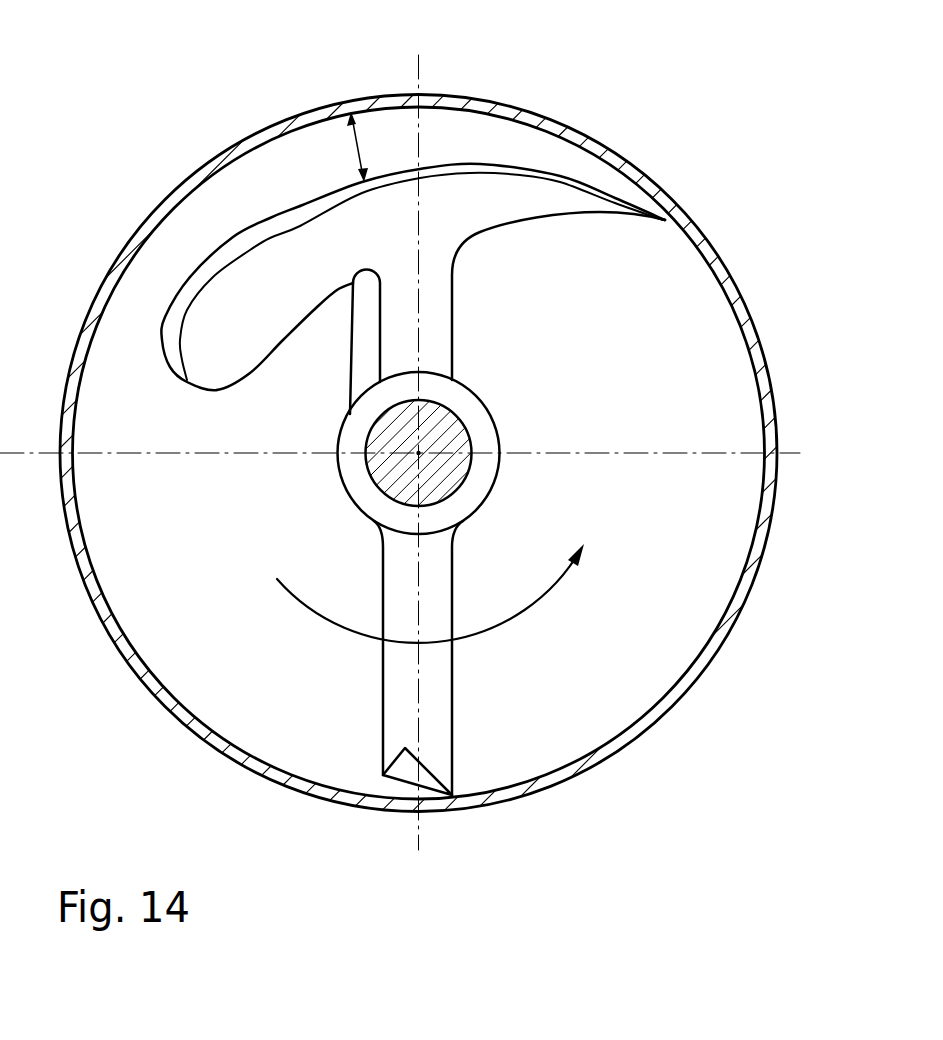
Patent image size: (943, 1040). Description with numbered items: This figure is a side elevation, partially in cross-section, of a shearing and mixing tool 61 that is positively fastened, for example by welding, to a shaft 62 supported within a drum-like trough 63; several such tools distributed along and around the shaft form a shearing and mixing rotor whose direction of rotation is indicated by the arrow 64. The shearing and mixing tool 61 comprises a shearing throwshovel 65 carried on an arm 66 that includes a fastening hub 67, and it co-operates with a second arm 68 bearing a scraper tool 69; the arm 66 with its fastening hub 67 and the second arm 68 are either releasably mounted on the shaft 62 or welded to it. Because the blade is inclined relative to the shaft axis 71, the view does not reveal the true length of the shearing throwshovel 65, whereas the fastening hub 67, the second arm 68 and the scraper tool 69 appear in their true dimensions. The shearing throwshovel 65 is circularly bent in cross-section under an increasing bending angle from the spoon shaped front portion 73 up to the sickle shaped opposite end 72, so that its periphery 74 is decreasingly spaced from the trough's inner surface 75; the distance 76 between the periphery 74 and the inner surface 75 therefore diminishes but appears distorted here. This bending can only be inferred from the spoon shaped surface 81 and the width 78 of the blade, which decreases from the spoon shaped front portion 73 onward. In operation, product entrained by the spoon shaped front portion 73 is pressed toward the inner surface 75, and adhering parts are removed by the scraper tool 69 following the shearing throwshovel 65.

The shearing and mixing tool 61 is at (400, 327).
The shaft 62 is at (388, 478).
The drum-like trough 63 is at (150, 690).
The arrow 64 is at (546, 598).
The shearing throwshovel 65 is at (355, 238).
The arm 66 is at (430, 345).
The fastening hub 67 is at (494, 407).
The second arm 68 is at (444, 698).
The scraper tool 69 is at (405, 768).
The shaft axis 71 is at (420, 455).
The sickle shaped opposite end 72 is at (665, 222).
The spoon shaped front portion 73 is at (186, 381).
The periphery 74 is at (234, 244).
The inner surface of the trough 75 is at (96, 580).
The distance 76 is at (362, 148).
The width 78 is at (198, 283).
The spoon shaped surface 81 is at (262, 323).